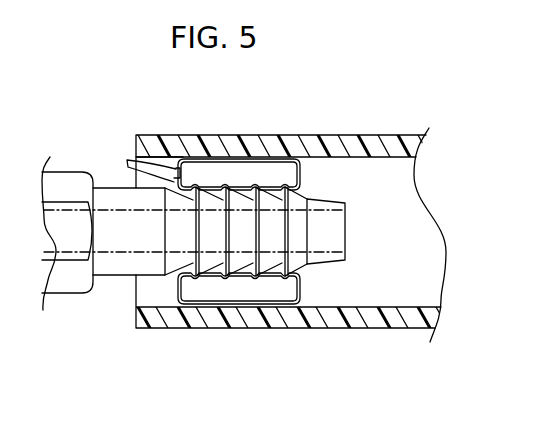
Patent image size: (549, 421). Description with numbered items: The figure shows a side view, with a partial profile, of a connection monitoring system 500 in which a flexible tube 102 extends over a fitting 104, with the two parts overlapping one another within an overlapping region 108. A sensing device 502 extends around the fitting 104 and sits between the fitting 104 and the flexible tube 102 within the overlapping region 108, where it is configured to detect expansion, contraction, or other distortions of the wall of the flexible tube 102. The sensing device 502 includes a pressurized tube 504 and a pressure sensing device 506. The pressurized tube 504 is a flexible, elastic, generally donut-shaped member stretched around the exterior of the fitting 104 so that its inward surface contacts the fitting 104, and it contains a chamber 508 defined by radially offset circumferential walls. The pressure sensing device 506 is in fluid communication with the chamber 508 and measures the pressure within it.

The connection monitoring system 500 is at (318, 97).
The flexible tube 102 is at (398, 330).
The fitting 104 is at (132, 254).
The overlapping region 108 is at (342, 341).
The sensing device 502 is at (183, 136).
The pressurized tube 504 is at (240, 136).
The pressure sensing device 506 is at (126, 158).
The chamber 508 is at (284, 288).